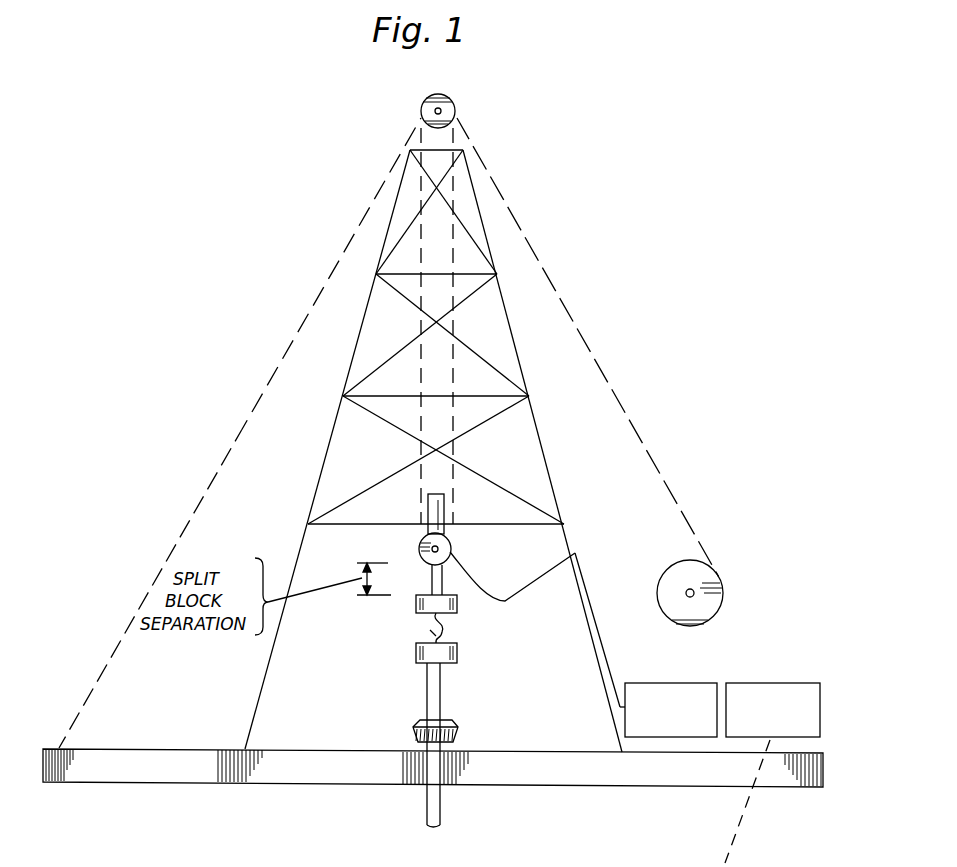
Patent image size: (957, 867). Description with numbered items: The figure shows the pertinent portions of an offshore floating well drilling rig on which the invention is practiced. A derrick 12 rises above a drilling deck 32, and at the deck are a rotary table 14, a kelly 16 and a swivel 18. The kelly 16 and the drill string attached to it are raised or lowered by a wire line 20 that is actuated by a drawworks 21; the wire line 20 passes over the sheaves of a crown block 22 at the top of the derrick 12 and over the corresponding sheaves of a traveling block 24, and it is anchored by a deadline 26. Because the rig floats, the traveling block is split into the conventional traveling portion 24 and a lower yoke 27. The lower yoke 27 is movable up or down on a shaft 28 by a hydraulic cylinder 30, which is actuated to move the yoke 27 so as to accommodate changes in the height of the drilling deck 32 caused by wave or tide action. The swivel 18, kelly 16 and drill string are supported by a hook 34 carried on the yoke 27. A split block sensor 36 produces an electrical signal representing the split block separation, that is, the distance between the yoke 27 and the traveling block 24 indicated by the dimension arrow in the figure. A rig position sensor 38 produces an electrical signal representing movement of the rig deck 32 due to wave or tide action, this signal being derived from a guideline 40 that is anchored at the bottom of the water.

The derrick 12 is at (535, 358).
The rotary table 14 is at (415, 724).
The kelly 16 is at (427, 683).
The swivel 18 is at (416, 652).
The wire line 20 is at (420, 362).
The drawworks 21 is at (725, 585).
The crown block 22 is at (456, 108).
The traveling block 24 is at (452, 543).
The deadline 26 is at (160, 573).
The lower yoke 27 is at (458, 611).
The shaft 28 is at (441, 578).
The hydraulic cylinder 30 is at (445, 503).
The drilling deck 32 is at (533, 772).
The hook 34 is at (444, 631).
The split block sensor 36 is at (658, 683).
The rig position sensor 38 is at (753, 683).
The guideline 40 is at (738, 828).